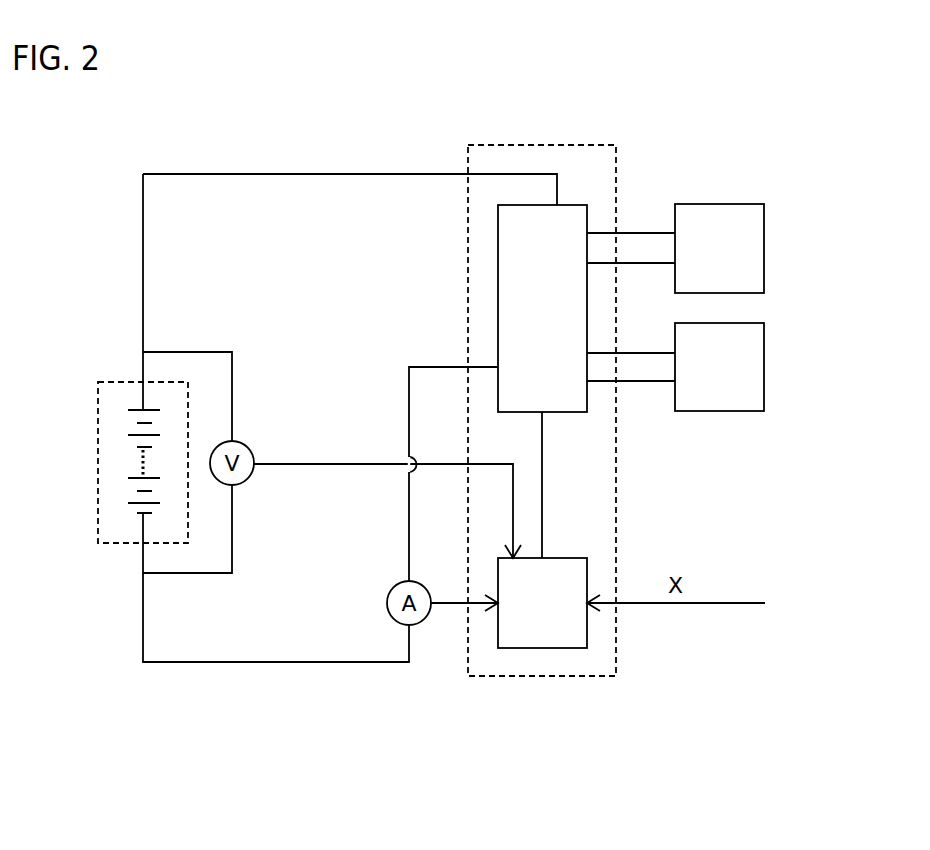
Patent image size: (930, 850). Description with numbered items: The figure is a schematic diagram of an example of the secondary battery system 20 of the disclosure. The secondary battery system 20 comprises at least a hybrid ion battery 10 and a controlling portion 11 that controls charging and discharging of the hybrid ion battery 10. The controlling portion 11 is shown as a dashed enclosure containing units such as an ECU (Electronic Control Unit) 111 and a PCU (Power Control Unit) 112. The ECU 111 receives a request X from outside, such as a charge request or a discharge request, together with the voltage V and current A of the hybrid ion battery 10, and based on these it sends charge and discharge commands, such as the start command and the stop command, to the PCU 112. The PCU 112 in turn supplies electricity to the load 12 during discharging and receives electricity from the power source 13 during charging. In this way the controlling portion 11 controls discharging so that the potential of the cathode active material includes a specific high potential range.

The secondary battery system 20 is at (726, 135).
The hybrid ion battery 10 is at (113, 380).
The controlling portion 11 is at (616, 498).
The ECU (Electronic Control Unit) 111 is at (562, 629).
The PCU (Power Control Unit) 112 is at (563, 393).
The load 12 is at (750, 245).
The power source 13 is at (750, 362).